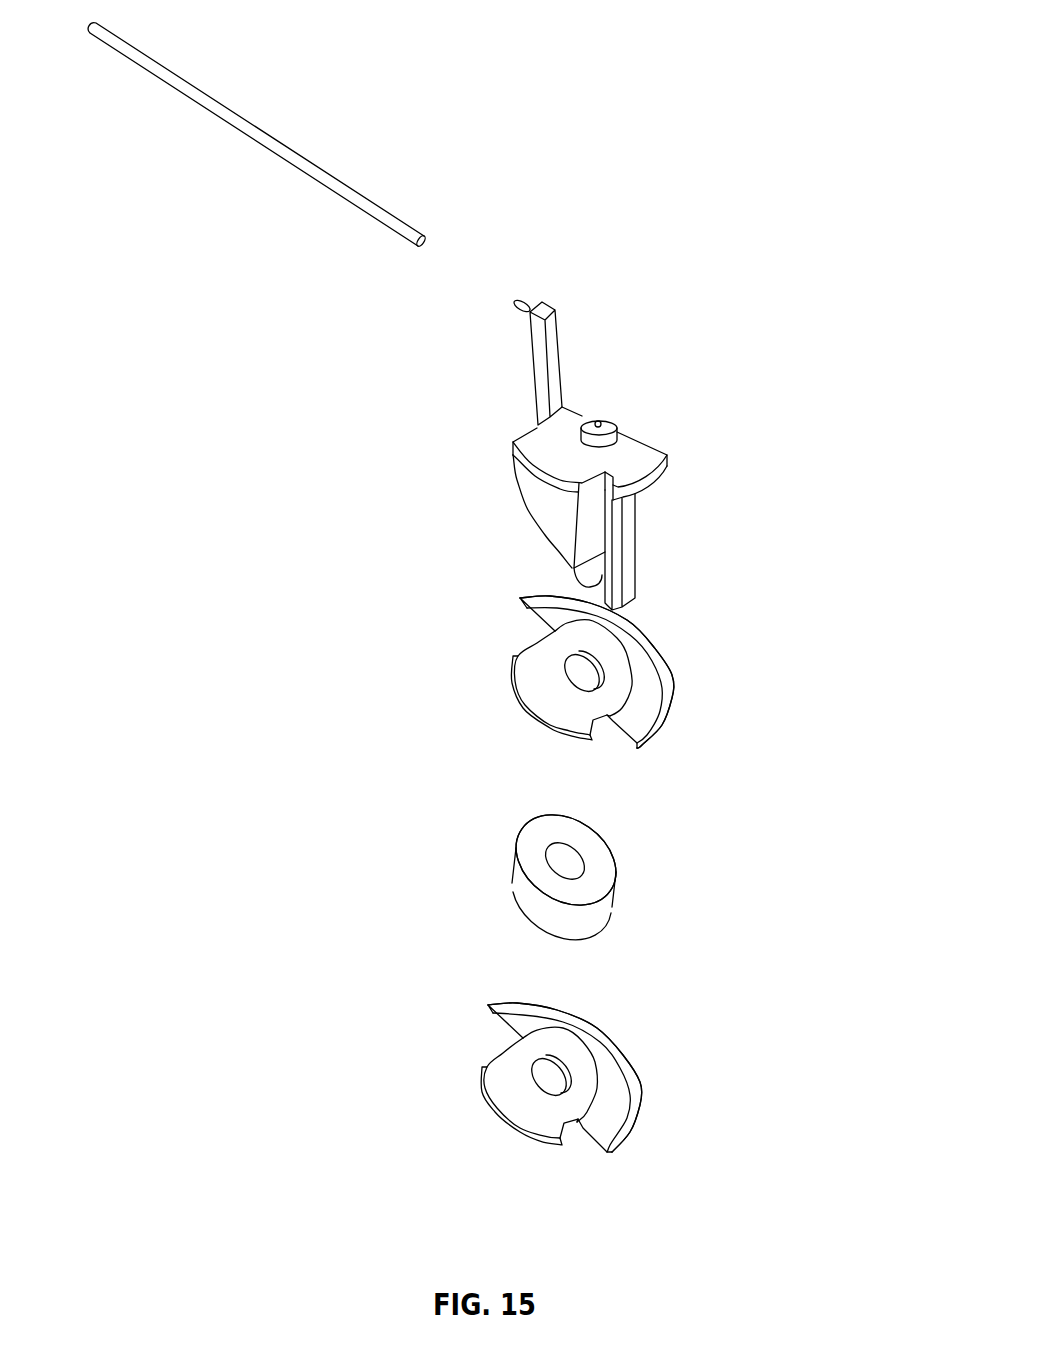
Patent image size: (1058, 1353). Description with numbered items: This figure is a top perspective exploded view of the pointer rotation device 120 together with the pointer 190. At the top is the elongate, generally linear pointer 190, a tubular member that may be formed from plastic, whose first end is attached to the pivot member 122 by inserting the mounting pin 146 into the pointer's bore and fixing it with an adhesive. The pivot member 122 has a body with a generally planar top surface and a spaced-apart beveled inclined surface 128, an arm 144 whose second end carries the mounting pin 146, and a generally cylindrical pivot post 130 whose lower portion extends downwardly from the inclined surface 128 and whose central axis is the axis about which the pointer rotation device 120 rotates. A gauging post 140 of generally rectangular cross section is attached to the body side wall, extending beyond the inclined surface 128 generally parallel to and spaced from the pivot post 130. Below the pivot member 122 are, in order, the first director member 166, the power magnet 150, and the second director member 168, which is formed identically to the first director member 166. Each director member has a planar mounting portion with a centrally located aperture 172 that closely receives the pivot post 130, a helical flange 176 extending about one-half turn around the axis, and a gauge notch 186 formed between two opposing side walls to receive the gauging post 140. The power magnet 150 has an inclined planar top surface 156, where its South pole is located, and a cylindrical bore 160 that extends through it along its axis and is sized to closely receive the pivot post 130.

The pointer rotation device 120 is at (708, 385).
The pivot member 122 is at (640, 455).
The inclined surface 128 is at (528, 527).
The pivot post 130 is at (562, 590).
The gauging post 140 is at (612, 517).
The arm 144 is at (553, 335).
The mounting pin 146 is at (522, 300).
The power magnet 150 is at (610, 852).
The top surface 156 is at (538, 827).
The bore 160 is at (545, 877).
The first director member 166 is at (672, 667).
The second director member 168 is at (638, 1084).
The aperture 172 is at (558, 684).
The helical flange 176 is at (660, 695).
The gauge notch 186 is at (577, 735).
The pointer 190 is at (313, 158).